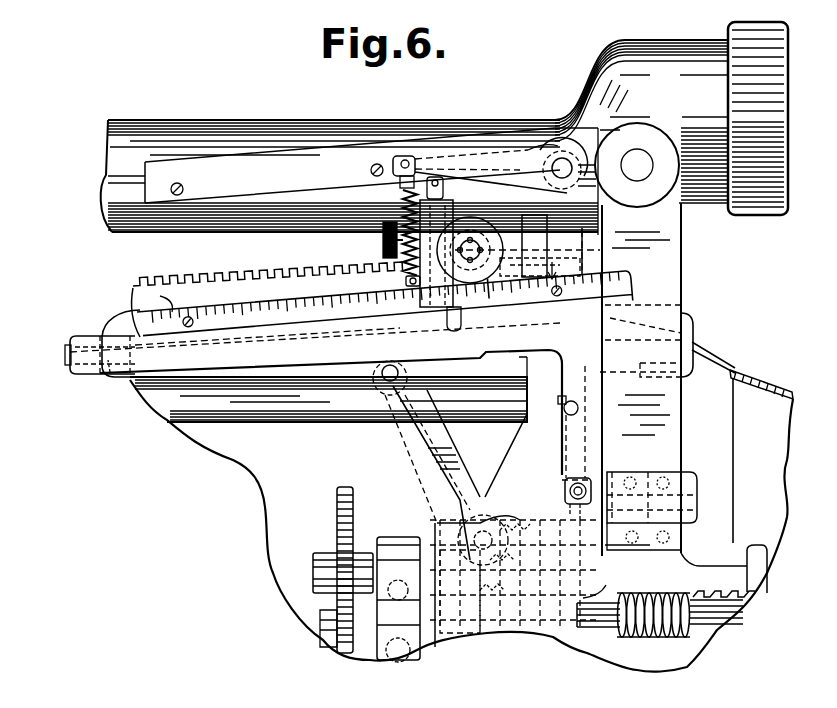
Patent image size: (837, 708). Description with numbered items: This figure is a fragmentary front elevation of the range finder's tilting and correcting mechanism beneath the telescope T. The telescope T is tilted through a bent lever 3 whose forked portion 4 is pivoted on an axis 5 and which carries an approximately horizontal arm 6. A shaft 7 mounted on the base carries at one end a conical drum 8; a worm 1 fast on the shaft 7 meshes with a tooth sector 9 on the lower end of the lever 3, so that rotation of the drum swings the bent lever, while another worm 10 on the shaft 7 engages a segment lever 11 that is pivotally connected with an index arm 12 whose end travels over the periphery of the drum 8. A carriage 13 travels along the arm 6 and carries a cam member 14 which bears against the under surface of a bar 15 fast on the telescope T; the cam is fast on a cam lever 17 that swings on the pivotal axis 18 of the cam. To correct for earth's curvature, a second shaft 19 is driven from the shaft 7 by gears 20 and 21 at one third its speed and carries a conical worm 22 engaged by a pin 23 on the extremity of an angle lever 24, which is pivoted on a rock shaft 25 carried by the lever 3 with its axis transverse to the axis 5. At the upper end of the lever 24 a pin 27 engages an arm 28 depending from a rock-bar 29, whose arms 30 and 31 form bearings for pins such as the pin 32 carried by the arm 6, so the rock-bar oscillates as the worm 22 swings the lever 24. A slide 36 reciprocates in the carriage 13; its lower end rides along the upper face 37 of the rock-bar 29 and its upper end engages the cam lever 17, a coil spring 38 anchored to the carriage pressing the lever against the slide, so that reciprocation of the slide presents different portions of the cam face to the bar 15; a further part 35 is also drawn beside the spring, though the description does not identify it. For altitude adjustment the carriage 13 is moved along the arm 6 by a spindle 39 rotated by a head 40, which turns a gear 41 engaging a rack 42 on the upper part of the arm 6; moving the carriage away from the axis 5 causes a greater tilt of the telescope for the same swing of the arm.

The telescope T is at (436, 120).
The worm 1 is at (668, 637).
The bent lever 3 is at (681, 420).
The forked portion 4 is at (662, 296).
The axis 5 is at (648, 173).
The horizontal arm 6 is at (120, 318).
The shaft 7 is at (592, 626).
The drum 8 is at (743, 442).
The tooth sector 9 is at (722, 582).
The worm 10 is at (515, 593).
The segment lever 11 is at (437, 470).
The index arm 12 is at (328, 382).
The carriage 13 is at (466, 254).
The cam member 14 is at (527, 238).
The bar 15 is at (352, 165).
The cam lever 17 is at (473, 160).
The pivotal axis 18 is at (557, 160).
The second shaft 19 is at (440, 530).
The gear 20 is at (350, 645).
The gear 21 is at (337, 521).
The conical worm 22 is at (545, 520).
The pin 23 is at (565, 492).
The angle lever 24 is at (570, 468).
The rock shaft 25 is at (592, 484).
The pin 27 is at (564, 413).
The arm 28 is at (344, 410).
The rock-bar 29 is at (315, 346).
The arm 30 is at (110, 372).
The arm 31 is at (450, 367).
The pin 32 is at (70, 357).
The stud 35 is at (383, 240).
The slide 36 is at (447, 190).
The upper face 37 is at (160, 296).
The coil spring 38 is at (400, 262).
The spindle 39 is at (474, 249).
The head 40 is at (415, 280).
The gear 41 is at (540, 262).
The rack 42 is at (222, 274).